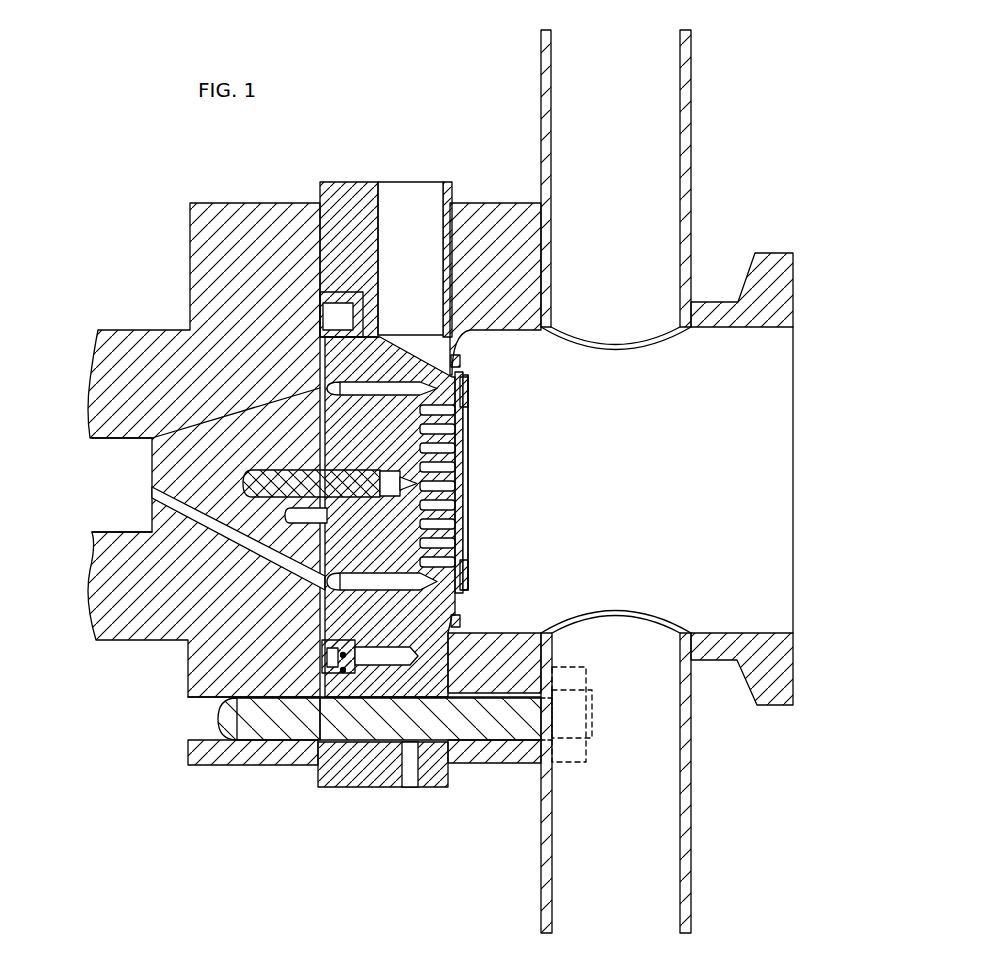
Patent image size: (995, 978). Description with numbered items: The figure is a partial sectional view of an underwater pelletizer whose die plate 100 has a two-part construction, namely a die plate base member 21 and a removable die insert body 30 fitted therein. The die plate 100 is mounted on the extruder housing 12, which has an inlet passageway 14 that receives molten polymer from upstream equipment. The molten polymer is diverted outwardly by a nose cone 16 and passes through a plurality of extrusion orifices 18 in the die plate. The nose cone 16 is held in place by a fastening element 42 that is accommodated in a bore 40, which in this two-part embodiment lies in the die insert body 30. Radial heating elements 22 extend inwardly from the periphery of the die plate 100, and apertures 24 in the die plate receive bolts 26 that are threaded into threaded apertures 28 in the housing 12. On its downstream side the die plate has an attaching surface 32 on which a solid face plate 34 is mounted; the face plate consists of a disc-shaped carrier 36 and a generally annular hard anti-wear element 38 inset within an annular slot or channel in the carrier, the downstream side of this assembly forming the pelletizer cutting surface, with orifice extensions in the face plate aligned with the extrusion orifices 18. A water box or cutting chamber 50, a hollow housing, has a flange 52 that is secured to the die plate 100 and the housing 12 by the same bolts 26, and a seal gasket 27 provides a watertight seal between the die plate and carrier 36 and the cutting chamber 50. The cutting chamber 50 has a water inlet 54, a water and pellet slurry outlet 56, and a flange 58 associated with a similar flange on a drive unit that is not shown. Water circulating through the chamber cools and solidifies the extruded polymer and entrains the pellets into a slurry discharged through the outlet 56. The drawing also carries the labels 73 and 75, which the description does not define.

The housing 12 is at (197, 202).
The inlet passageway 14 is at (102, 436).
The nose cone 16 is at (190, 479).
The extrusion orifices 18 is at (380, 566).
The die plate base member 21 is at (346, 205).
The radial heating elements 22 is at (418, 205).
The apertures 24 is at (330, 752).
The bolts 26 is at (303, 721).
The seal gasket 27 is at (462, 361).
The threaded apertures 28 is at (241, 749).
The die insert body 30 is at (382, 416).
The attaching surface 32 is at (468, 422).
The solid face plate 34 is at (479, 530).
The disc-shaped carrier 36 is at (479, 446).
The hard anti-wear element 38 is at (479, 392).
The bore 40 is at (468, 470).
The fastening element 42 is at (300, 483).
The cutting chamber 50 is at (803, 318).
The flange 52 is at (478, 731).
The water inlet 54 is at (696, 861).
The water and pellet slurry outlet 56 is at (695, 99).
The flange 58 is at (771, 272).
The seal 73 is at (345, 676).
The gap 75 is at (322, 689).
The die plate 100 is at (353, 150).